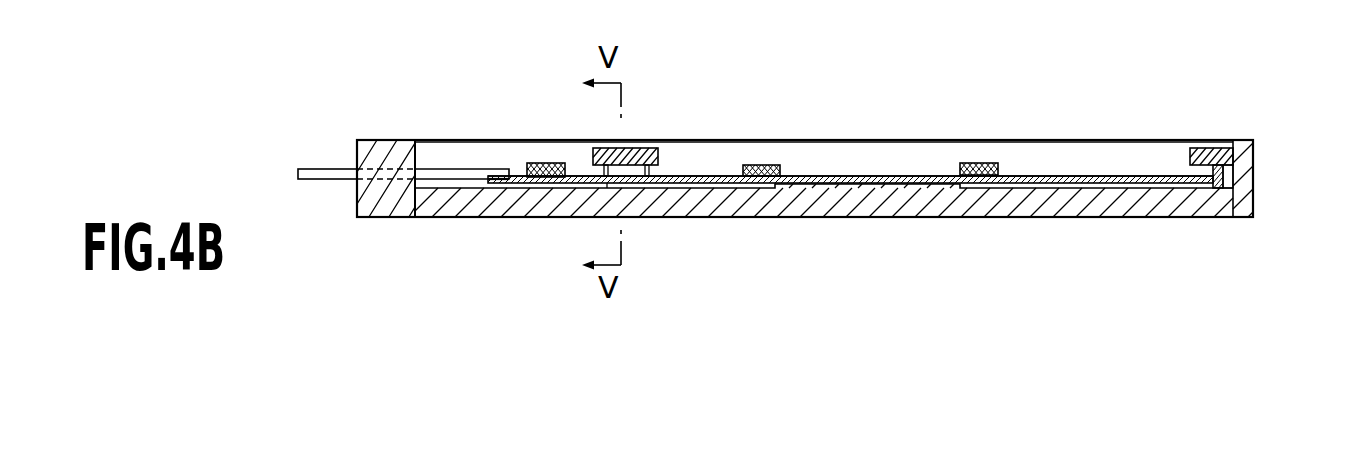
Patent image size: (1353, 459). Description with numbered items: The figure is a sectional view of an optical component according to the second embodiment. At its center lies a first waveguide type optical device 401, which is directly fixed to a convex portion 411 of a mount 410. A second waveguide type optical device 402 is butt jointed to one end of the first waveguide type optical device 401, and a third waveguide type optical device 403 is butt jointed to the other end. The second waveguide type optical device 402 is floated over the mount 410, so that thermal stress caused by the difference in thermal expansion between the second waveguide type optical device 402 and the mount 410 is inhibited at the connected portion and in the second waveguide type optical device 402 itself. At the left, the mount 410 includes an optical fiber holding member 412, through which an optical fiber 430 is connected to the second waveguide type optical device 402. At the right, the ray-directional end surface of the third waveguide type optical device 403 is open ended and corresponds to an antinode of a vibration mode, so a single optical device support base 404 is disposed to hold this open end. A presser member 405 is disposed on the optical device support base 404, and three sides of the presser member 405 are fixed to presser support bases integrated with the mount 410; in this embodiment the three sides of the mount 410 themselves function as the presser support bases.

The first waveguide type optical device 401 is at (858, 176).
The second waveguide type optical device 402 is at (693, 176).
The third waveguide type optical device 403 is at (1058, 177).
The optical device support base 404 is at (1227, 169).
The presser member 405 is at (1207, 148).
The mount 410 is at (1068, 208).
The convex portion 411 is at (870, 189).
The optical fiber holding member 412 is at (390, 147).
The optical fiber 430 is at (320, 148).